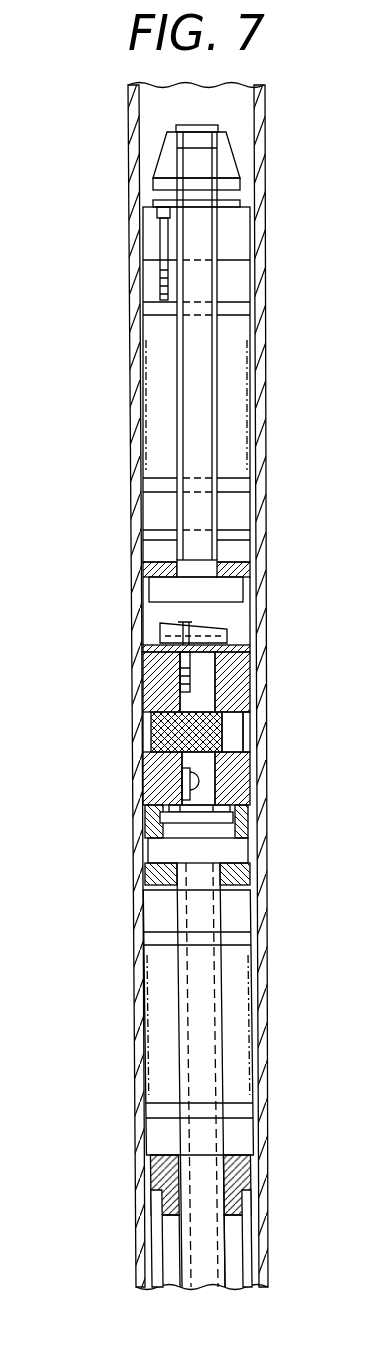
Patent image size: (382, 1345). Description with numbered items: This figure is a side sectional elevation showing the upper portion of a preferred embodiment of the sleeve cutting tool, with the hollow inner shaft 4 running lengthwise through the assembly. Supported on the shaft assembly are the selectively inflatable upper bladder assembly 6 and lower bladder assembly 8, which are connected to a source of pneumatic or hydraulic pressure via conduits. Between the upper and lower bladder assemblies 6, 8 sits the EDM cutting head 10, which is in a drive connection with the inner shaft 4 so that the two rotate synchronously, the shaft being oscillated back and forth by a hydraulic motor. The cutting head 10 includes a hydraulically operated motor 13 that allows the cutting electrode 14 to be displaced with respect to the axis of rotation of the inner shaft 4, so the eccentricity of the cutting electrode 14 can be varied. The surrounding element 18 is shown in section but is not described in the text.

The outer casing 18 is at (130, 236).
The upper bladder assembly 6 is at (160, 415).
The cutting electrode 14 is at (145, 645).
The EDM cutting head 10 is at (155, 690).
The hydraulically operated motor 13 is at (150, 735).
The inner shaft 4 is at (178, 1018).
The lower bladder assembly 8 is at (163, 1072).